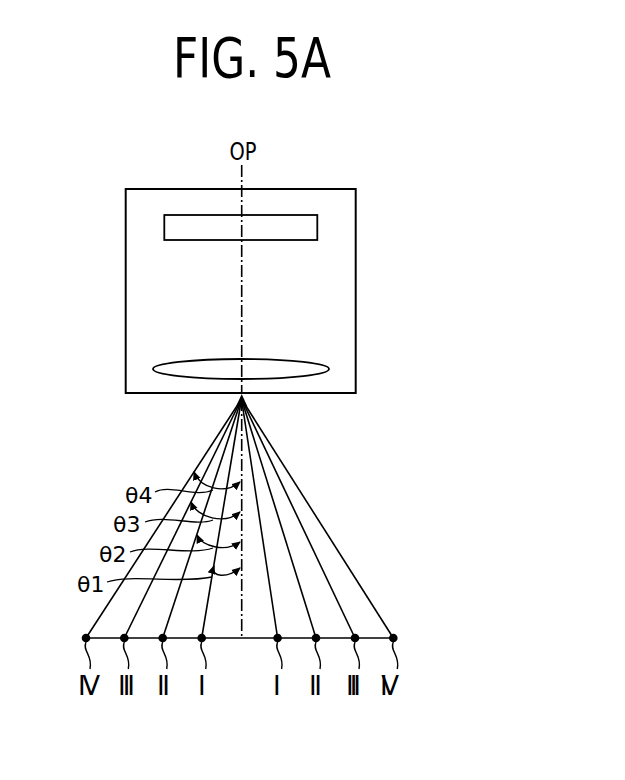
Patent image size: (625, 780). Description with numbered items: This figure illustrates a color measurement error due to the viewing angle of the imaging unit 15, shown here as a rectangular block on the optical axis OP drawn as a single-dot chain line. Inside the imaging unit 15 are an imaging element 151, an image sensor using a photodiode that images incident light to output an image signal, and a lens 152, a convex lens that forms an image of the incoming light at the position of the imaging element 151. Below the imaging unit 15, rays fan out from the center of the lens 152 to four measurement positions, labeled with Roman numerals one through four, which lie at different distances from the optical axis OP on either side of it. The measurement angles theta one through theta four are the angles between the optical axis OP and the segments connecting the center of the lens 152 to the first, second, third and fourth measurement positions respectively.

The imaging unit 15 is at (356, 209).
The imaging element 151 is at (303, 232).
The lens 152 is at (320, 365).